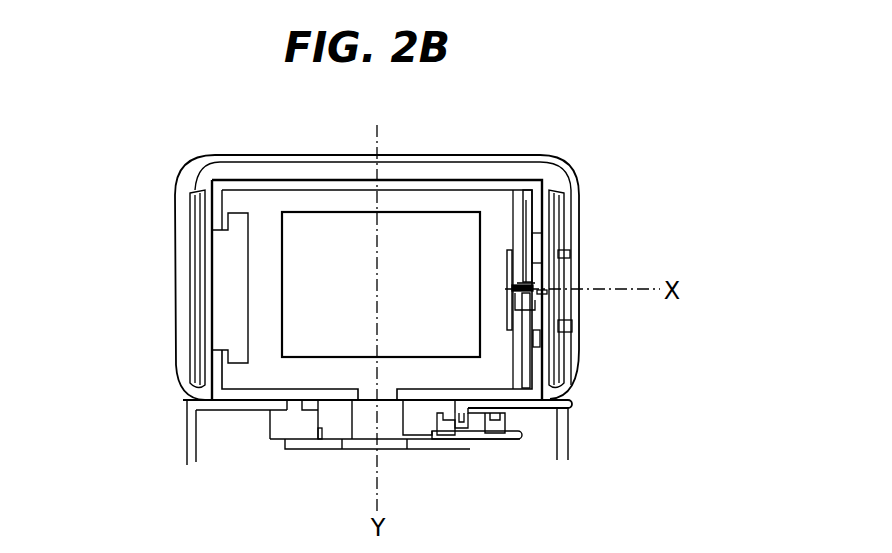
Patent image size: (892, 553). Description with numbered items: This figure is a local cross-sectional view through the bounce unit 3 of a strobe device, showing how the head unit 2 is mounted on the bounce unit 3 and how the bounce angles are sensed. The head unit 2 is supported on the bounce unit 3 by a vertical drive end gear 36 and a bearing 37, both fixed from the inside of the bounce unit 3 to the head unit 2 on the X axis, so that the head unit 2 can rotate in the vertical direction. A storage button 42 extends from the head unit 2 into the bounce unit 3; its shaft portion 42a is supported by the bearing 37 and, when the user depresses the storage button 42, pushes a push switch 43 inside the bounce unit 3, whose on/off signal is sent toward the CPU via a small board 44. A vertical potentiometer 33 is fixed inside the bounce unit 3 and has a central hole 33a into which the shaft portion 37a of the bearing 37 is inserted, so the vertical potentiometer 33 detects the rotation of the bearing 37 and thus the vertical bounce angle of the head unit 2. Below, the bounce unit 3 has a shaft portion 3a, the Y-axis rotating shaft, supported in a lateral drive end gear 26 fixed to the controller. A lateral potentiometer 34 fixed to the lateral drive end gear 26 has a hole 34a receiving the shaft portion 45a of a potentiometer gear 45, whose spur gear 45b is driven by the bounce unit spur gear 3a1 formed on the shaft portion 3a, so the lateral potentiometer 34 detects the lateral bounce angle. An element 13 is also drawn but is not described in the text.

The head unit 2 is at (362, 163).
The bounce unit 3 is at (332, 183).
The shaft portion 3a is at (340, 433).
The bounce unit spur gear 3a1 is at (318, 438).
The optical element holder 13 is at (298, 223).
The lateral drive end gear 26 is at (278, 428).
The vertical potentiometer 33 is at (528, 312).
The hole 33a is at (515, 292).
The lateral potentiometer 34 is at (504, 423).
The hole 34a is at (566, 403).
The vertical drive end gear 36 is at (218, 289).
The bearing 37 is at (540, 249).
The shaft portion 37a is at (522, 283).
The storage button 42 is at (578, 297).
The shaft portion 42a is at (543, 299).
The push switch 43 is at (514, 287).
The small board 44 is at (508, 253).
The potentiometer gear 45 is at (505, 431).
The shaft portion 45a is at (472, 423).
The spur gear 45b is at (433, 430).